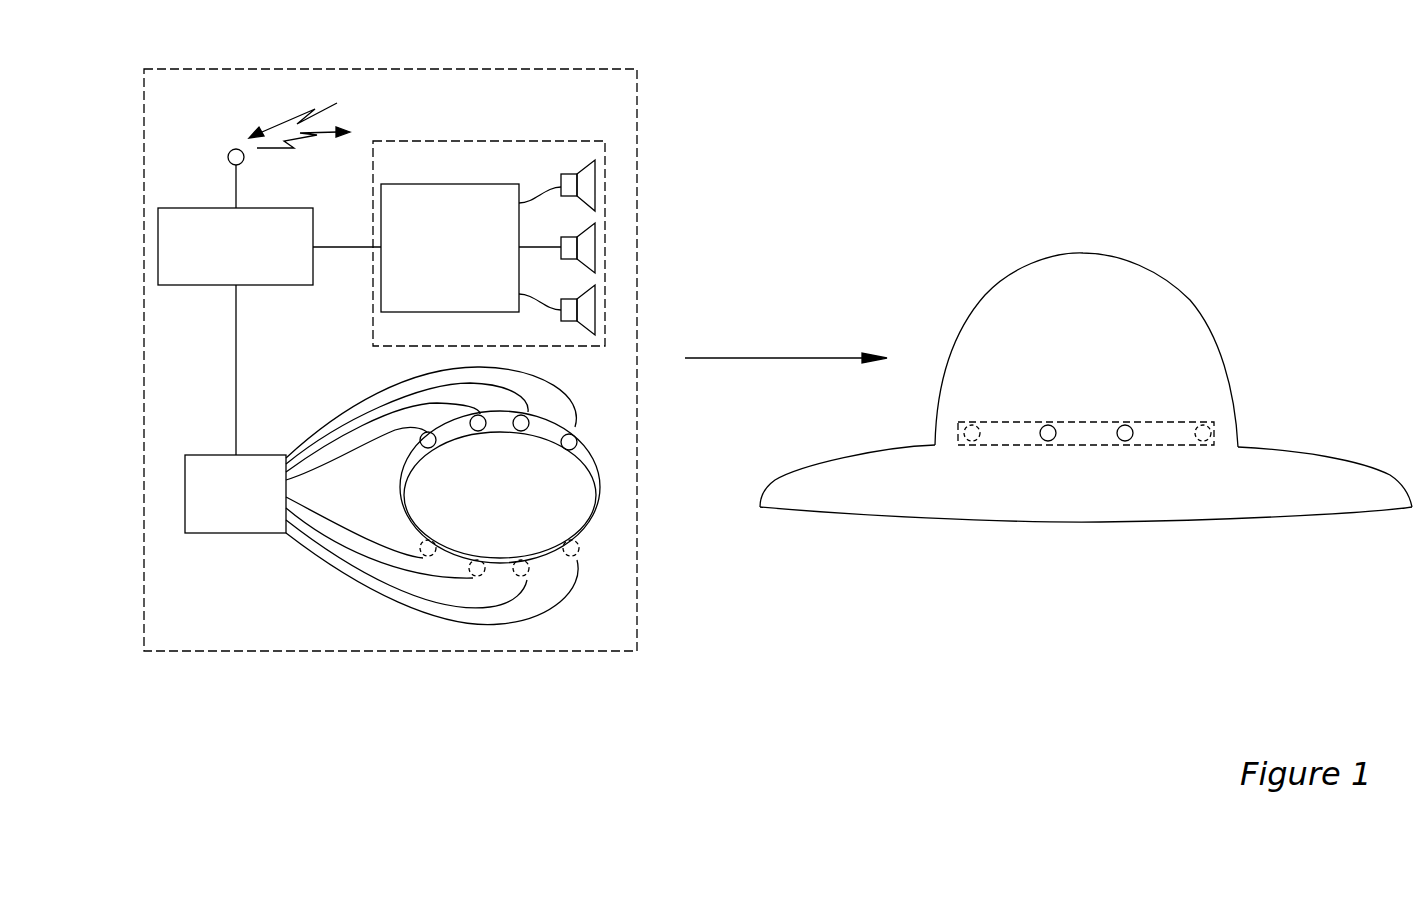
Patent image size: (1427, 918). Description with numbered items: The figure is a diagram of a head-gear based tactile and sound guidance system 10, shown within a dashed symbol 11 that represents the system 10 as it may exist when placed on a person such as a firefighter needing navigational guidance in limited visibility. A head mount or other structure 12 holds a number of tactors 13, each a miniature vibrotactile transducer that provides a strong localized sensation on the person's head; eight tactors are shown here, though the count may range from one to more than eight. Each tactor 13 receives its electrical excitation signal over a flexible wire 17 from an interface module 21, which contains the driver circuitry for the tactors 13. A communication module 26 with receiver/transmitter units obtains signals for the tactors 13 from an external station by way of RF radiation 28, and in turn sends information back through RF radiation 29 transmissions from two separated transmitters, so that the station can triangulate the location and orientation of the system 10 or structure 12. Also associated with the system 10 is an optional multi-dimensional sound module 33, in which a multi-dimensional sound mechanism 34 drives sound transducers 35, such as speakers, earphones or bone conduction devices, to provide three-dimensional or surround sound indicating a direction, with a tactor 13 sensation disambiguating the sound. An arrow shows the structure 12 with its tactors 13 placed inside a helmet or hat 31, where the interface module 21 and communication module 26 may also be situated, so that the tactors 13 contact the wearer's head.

The tactile guidance system 10 is at (275, 575).
The symbol 11 is at (535, 69).
The head mount structure 12 is at (588, 527).
The tactor 13 is at (480, 431).
The flexible wire 17 is at (343, 450).
The interface module 21 is at (254, 455).
The communication module 26 is at (277, 285).
The RF radiation 28 is at (302, 118).
The RF radiation transmissions 29 is at (298, 140).
The hat 31 is at (1163, 275).
The multi-dimensional sound module 33 is at (438, 141).
The mechanism 34 is at (393, 312).
The sound transducers 35 is at (593, 160).